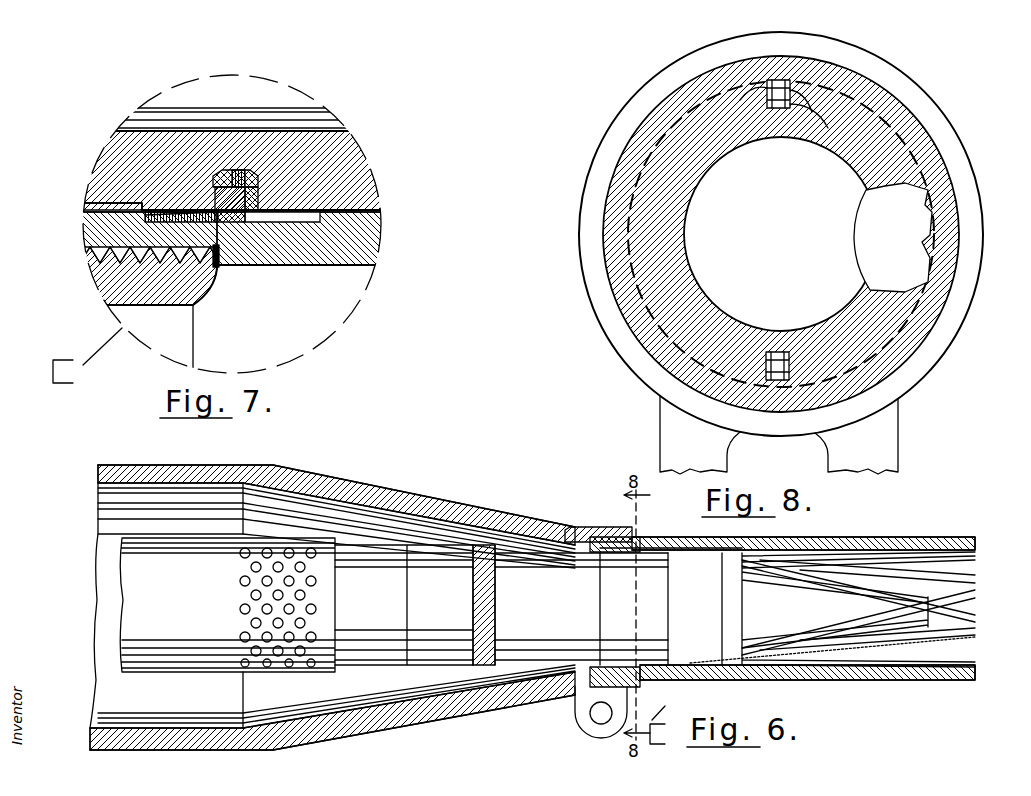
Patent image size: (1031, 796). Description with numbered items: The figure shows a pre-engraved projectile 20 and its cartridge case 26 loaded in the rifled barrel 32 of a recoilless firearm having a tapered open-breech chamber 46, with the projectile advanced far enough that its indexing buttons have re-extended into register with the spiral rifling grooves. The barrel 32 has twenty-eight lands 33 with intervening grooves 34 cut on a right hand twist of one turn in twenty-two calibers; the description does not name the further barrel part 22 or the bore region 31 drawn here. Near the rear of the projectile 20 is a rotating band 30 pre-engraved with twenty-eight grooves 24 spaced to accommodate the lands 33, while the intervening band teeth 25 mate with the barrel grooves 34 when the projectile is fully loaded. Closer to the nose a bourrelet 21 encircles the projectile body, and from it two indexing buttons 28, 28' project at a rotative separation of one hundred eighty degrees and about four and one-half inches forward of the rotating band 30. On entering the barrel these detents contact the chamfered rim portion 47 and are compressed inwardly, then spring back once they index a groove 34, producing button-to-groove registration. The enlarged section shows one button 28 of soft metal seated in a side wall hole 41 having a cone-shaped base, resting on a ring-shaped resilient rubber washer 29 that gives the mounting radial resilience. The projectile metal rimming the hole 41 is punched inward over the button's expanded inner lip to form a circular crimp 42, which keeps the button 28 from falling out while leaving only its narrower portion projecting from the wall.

In FIG. 7, the pre-engraved projectile 20 is at (112, 170).
In FIG. 8, the pre-engraved projectile 20 is at (688, 210).
In FIG. 6, the pre-engraved projectile 20 is at (501, 605).
In FIG. 7, the bourrelet 21 is at (144, 258).
In FIG. 8, the bourrelet 21 is at (636, 252).
In FIG. 6, the bourrelet 21 is at (618, 604).
In FIG. 6, the flared outlet section 22 is at (832, 609).
In FIG. 6, the grooves 24 is at (470, 595).
In FIG. 6, the band teeth 25 is at (472, 585).
In FIG. 6, the cartridge case 26 is at (165, 660).
In FIG. 7, the indexing button 28 is at (267, 198).
In FIG. 8, the indexing button 28 is at (746, 112).
In FIG. 6, the indexing button 28 is at (632, 702).
In FIG. 6, the indexing button 28' is at (636, 523).
In FIG. 7, the washer 29 is at (258, 178).
In FIG. 8, the washer 29 is at (792, 100).
In FIG. 6, the rotating band 30 is at (495, 604).
In FIG. 7, the gas passage 31 is at (235, 105).
In FIG. 8, the gas passage 31 is at (781, 254).
In FIG. 7, the barrel 32 is at (353, 268).
In FIG. 8, the barrel 32 is at (633, 322).
In FIG. 6, the barrel 32 is at (975, 537).
In FIG. 7, the lands 33 is at (338, 214).
In FIG. 8, the lands 33 is at (920, 216).
In FIG. 6, the lands 33 is at (986, 591).
In FIG. 7, the grooves 34 is at (296, 220).
In FIG. 8, the grooves 34 is at (924, 241).
In FIG. 6, the grooves 34 is at (986, 621).
In FIG. 7, the hole 41 is at (225, 172).
In FIG. 8, the hole 41 is at (779, 108).
In FIG. 7, the circular crimp 42 is at (215, 215).
In FIG. 8, the circular crimp 42 is at (818, 121).
In FIG. 7, the tapered open-breech chamber 46 is at (193, 322).
In FIG. 8, the tapered open-breech chamber 46 is at (628, 374).
In FIG. 6, the tapered open-breech chamber 46 is at (100, 464).
In FIG. 6, the chamfered rim portion 47 is at (603, 527).